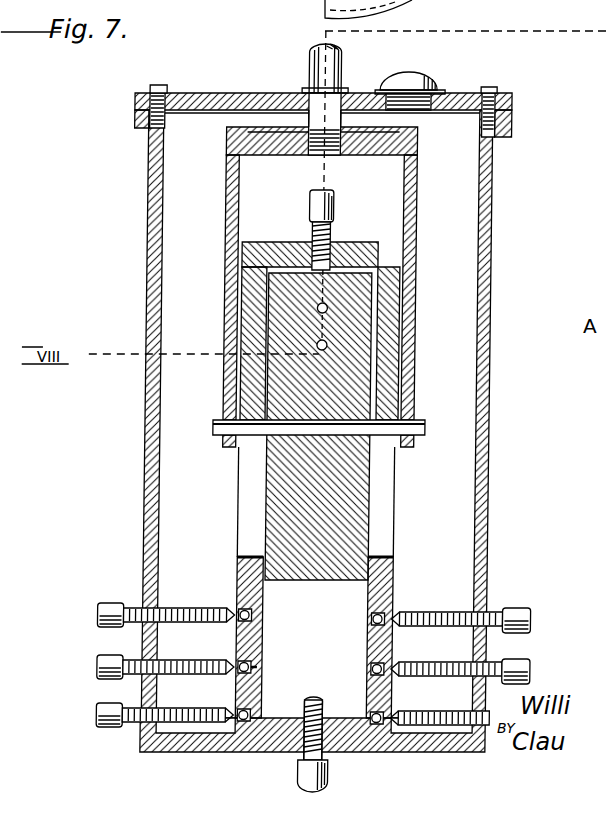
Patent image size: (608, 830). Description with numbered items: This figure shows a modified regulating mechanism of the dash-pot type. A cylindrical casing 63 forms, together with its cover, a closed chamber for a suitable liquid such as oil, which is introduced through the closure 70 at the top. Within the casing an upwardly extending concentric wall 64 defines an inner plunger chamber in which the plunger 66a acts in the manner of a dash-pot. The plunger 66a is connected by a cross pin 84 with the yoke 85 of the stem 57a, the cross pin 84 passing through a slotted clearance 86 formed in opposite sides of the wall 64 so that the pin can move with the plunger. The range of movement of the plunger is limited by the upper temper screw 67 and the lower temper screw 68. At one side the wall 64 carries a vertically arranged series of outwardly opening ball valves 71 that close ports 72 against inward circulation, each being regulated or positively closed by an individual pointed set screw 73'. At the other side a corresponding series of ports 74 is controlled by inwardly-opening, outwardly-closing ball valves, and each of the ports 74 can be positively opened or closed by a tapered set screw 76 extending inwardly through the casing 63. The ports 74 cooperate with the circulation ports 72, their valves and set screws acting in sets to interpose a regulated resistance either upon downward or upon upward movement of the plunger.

The stem 57a is at (316, 72).
The closure 70 is at (414, 100).
The cylindrical casing 63 is at (150, 223).
The upper temper screw 67 is at (334, 227).
The yoke 85 is at (418, 291).
The cross pin 84 is at (420, 426).
The slotted clearance 86 is at (401, 513).
The plunger 66a is at (319, 411).
The concentric wall 64 is at (399, 591).
The pointed set screw 73' is at (138, 665).
The port 72 is at (264, 668).
The ball valve 71 is at (245, 669).
The port 74 is at (395, 675).
The tapered set screw 76 is at (508, 673).
The lower temper screw 68 is at (308, 750).